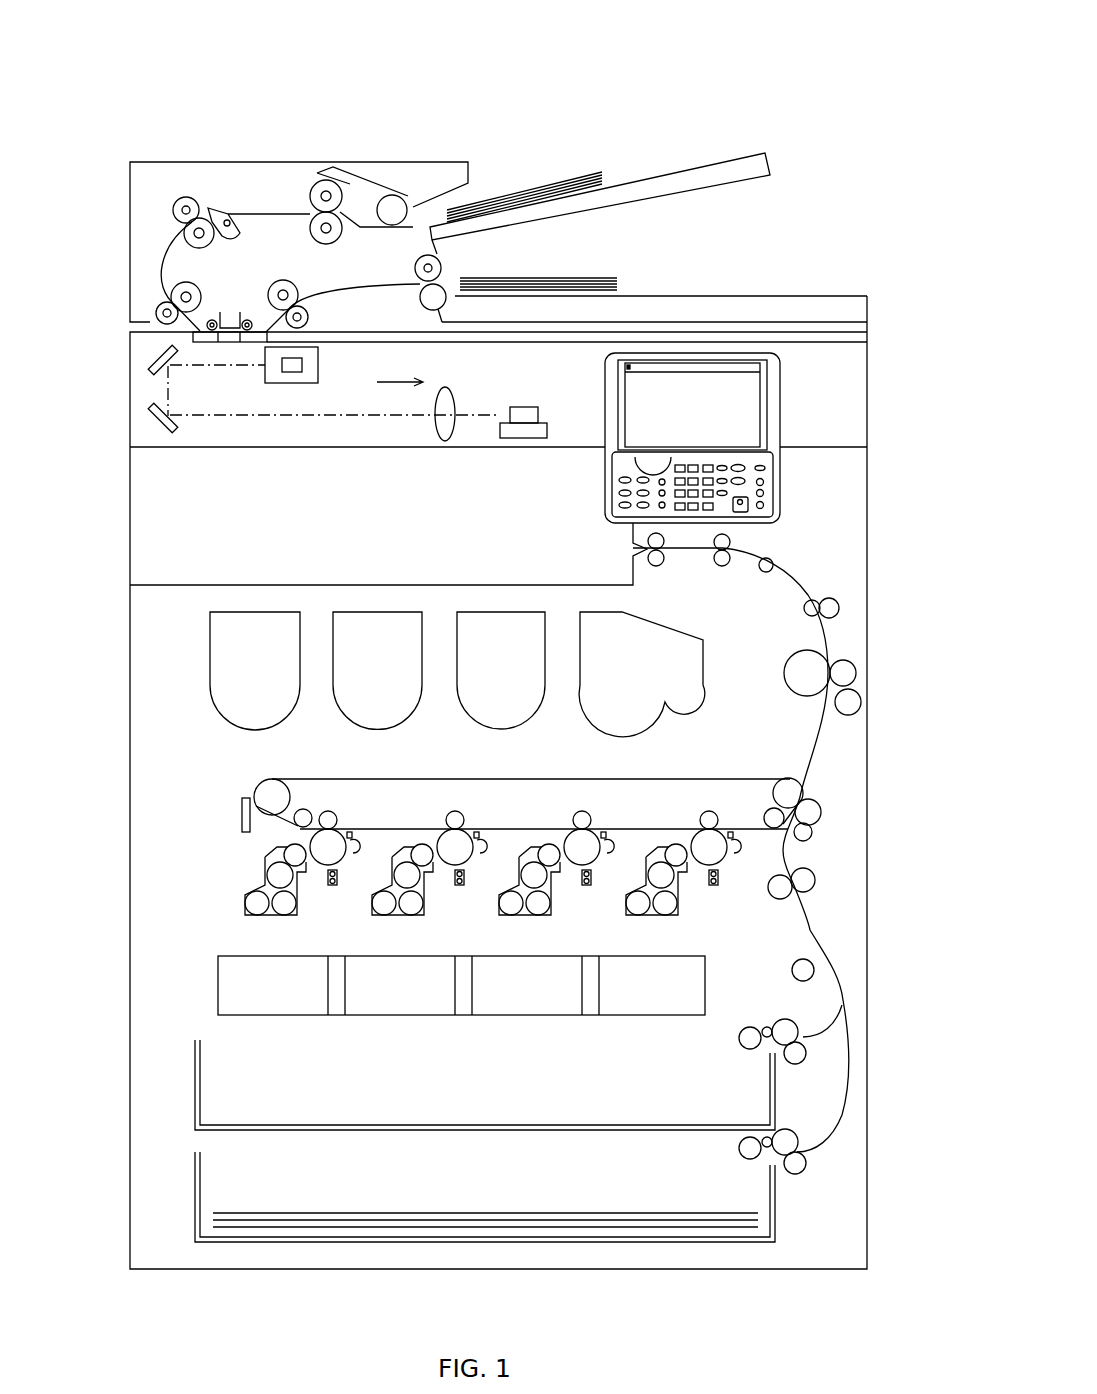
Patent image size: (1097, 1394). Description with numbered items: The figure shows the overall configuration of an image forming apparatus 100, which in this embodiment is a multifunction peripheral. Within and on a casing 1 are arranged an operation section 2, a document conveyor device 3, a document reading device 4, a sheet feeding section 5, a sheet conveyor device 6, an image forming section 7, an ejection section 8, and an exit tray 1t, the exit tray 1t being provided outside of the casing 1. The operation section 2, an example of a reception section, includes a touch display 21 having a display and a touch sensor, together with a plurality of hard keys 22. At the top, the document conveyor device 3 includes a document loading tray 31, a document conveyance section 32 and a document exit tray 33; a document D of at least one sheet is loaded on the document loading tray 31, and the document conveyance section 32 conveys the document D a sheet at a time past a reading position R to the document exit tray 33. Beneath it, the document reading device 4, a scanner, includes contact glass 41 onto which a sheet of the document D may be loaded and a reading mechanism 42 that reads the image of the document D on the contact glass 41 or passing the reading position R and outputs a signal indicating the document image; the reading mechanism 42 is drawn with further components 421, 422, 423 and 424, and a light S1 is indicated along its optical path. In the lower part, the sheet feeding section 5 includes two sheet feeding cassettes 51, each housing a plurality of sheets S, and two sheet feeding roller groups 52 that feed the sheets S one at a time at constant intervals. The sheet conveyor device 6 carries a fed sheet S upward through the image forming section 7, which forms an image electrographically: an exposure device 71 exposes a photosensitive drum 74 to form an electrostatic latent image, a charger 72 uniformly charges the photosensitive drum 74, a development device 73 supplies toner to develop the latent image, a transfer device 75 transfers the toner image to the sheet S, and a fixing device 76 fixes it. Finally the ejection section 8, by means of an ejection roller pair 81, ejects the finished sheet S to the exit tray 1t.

The image forming apparatus 100 is at (757, 86).
The casing 1 is at (867, 612).
The exit tray 1t is at (403, 583).
The operation section 2 is at (758, 342).
The touch display 21 is at (727, 353).
The hard keys 22 is at (779, 465).
The document conveyor device 3 is at (647, 130).
The document loading tray 31 is at (698, 168).
The document conveyance section 32 is at (218, 170).
The document exit tray 33 is at (643, 295).
The document reading device 4 is at (865, 389).
The contact glass 41 is at (812, 337).
The reading mechanism 42 is at (481, 384).
The light source 421 is at (292, 372).
The light source unit 422 is at (318, 363).
The mirror 423 is at (262, 428).
The image sensor 424 is at (547, 430).
The sheet feeding section 5 is at (177, 1201).
The sheet feeding cassette 51 is at (195, 1077).
The sheet feeding roller group 52 is at (723, 1048).
The sheet conveyor device 6 is at (812, 856).
The image forming section 7 is at (183, 994).
The exposure device 71 is at (207, 940).
The charger 72 is at (323, 888).
The development device 73 is at (275, 847).
The photosensitive drum 74 is at (333, 838).
The transfer device 75 is at (332, 760).
The fixing device 76 is at (805, 713).
The ejection section 8 is at (672, 580).
The ejection roller pair 81 is at (657, 567).
The document D is at (586, 166).
The reading position R is at (218, 355).
The sheet S is at (267, 1240).
The reflected light S1 is at (393, 380).